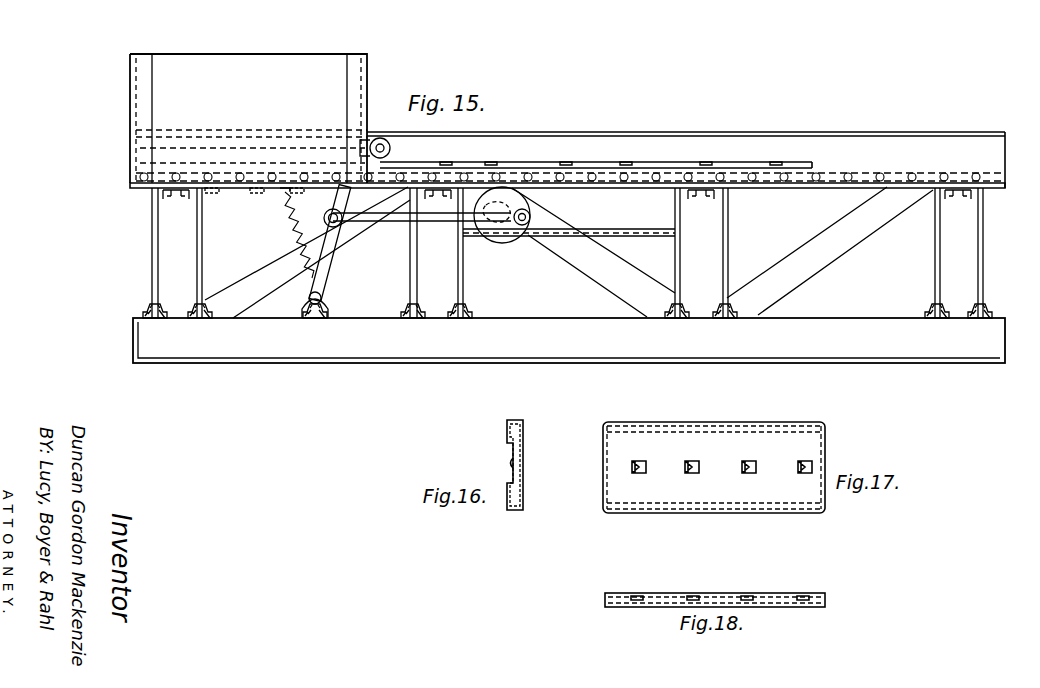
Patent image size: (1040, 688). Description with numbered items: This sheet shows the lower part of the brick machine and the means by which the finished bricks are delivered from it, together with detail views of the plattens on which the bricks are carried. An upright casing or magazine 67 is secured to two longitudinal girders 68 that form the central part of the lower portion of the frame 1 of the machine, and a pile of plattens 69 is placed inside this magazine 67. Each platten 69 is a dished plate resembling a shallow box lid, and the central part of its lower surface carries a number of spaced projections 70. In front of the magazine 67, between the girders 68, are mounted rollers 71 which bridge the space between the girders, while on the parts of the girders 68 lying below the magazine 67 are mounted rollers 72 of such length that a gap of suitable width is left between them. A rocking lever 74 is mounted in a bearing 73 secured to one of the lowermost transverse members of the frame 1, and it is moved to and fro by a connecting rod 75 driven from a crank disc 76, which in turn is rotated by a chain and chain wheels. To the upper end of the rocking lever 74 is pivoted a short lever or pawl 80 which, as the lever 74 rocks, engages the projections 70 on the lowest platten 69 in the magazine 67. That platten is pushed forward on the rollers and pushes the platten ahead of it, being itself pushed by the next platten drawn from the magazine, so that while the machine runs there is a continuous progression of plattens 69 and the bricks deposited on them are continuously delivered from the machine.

In FIG. 15, the frame 1 is at (192, 263).
In FIG. 15, the upright casing or magazine 67 is at (248, 118).
In FIG. 15, the longitudinal girders 68 is at (887, 171).
In FIG. 15, the plattens 69 is at (262, 147).
In FIG. 16, the plattens 69 is at (507, 433).
In FIG. 17, the plattens 69 is at (810, 443).
In FIG. 18, the plattens 69 is at (820, 600).
In FIG. 15, the spaced projections 70 is at (447, 162).
In FIG. 16, the spaced projections 70 is at (512, 464).
In FIG. 17, the spaced projections 70 is at (641, 473).
In FIG. 18, the spaced projections 70 is at (690, 595).
In FIG. 15, the rollers 71 is at (605, 183).
In FIG. 15, the rollers 72 is at (222, 190).
In FIG. 15, the bearing 73 is at (322, 302).
In FIG. 15, the rocking lever 74 is at (324, 270).
In FIG. 15, the connecting rod 75 is at (393, 221).
In FIG. 15, the crank disc 76 is at (501, 243).
In FIG. 15, the short lever or pawl 80 is at (288, 194).